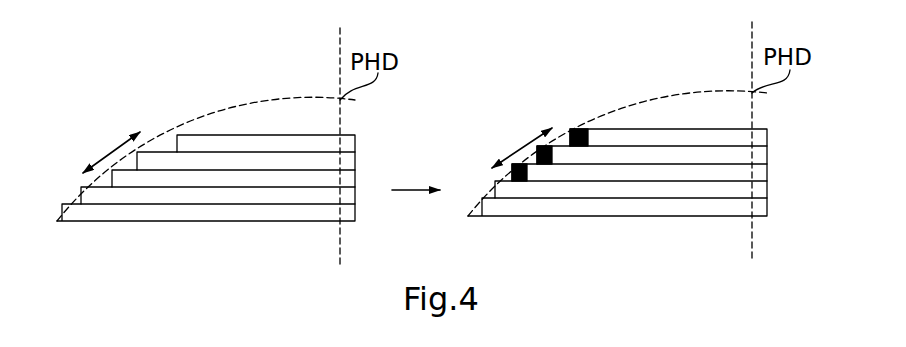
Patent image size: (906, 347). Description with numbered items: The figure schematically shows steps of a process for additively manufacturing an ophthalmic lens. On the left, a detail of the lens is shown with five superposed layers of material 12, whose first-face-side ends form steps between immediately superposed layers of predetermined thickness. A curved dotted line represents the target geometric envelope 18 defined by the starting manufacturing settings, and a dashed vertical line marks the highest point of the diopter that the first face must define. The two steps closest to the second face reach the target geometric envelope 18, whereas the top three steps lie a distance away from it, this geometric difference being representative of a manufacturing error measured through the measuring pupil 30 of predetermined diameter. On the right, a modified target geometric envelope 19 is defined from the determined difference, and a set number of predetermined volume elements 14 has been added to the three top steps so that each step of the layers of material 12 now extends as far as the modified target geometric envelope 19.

The superposed layers of material 12 is at (348, 145).
The predetermined volume elements 14 is at (579, 146).
The target geometric envelope 18 is at (224, 112).
The modified target geometric envelope 19 is at (635, 110).
The measuring pupil 30 is at (112, 148).